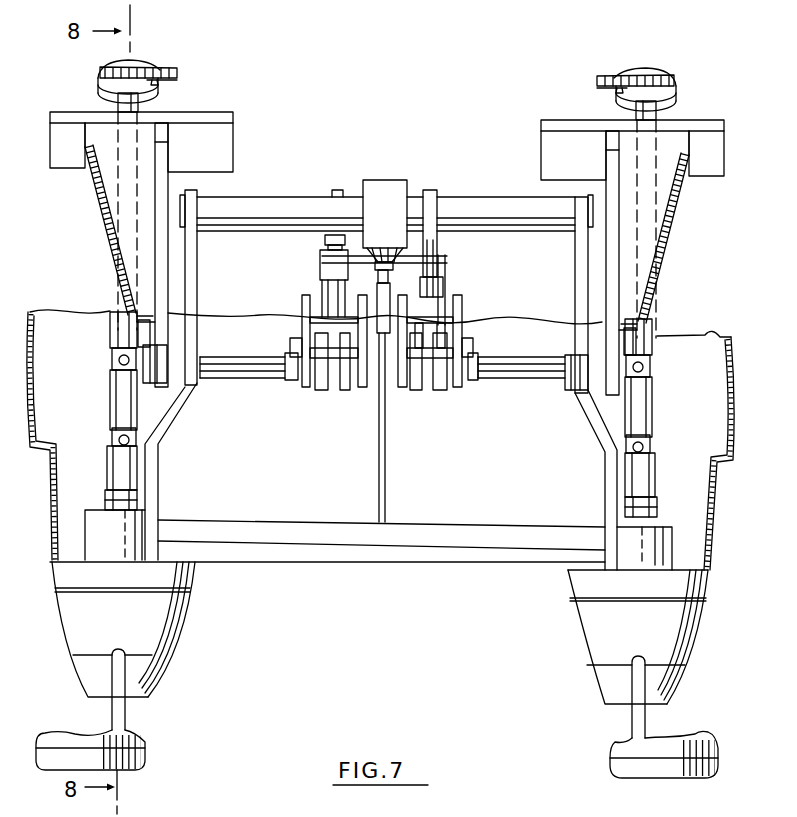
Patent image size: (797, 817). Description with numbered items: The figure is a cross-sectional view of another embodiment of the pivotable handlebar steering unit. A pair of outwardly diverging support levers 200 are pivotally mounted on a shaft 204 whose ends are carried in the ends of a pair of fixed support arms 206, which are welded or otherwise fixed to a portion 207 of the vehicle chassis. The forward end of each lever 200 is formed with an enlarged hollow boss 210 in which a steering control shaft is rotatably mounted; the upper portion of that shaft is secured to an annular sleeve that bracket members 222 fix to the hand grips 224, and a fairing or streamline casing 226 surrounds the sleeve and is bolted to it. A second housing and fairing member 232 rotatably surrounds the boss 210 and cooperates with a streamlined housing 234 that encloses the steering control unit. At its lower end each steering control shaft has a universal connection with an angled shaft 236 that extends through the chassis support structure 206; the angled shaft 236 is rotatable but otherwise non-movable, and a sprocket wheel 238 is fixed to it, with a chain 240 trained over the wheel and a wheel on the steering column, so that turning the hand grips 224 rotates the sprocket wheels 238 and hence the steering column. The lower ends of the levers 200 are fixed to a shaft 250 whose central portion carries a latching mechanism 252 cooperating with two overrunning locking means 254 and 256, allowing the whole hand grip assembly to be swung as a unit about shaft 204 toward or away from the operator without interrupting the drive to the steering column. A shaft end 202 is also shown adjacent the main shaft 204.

The support levers 200 is at (165, 423).
The shaft bearing 202 is at (203, 360).
The shaft 204 is at (266, 366).
The fixed support arms 206 is at (160, 230).
The portion of the vehicle chassis 207 is at (218, 120).
The enlarged hollow boss 210 is at (138, 527).
The bracket members 222 is at (122, 716).
The hand grips 224 is at (140, 757).
The fairing or streamline casing 226 is at (153, 681).
The second housing and fairing member 232 is at (580, 583).
The streamlined housing 234 is at (711, 536).
The angled shaft 236 is at (118, 293).
The sprocket wheel 238 is at (106, 97).
The chain 240 is at (173, 67).
The shaft 250 is at (268, 206).
The latching mechanism 252 is at (396, 175).
The overrunning locking means 254 is at (334, 392).
The overrunning locking means 256 is at (430, 392).